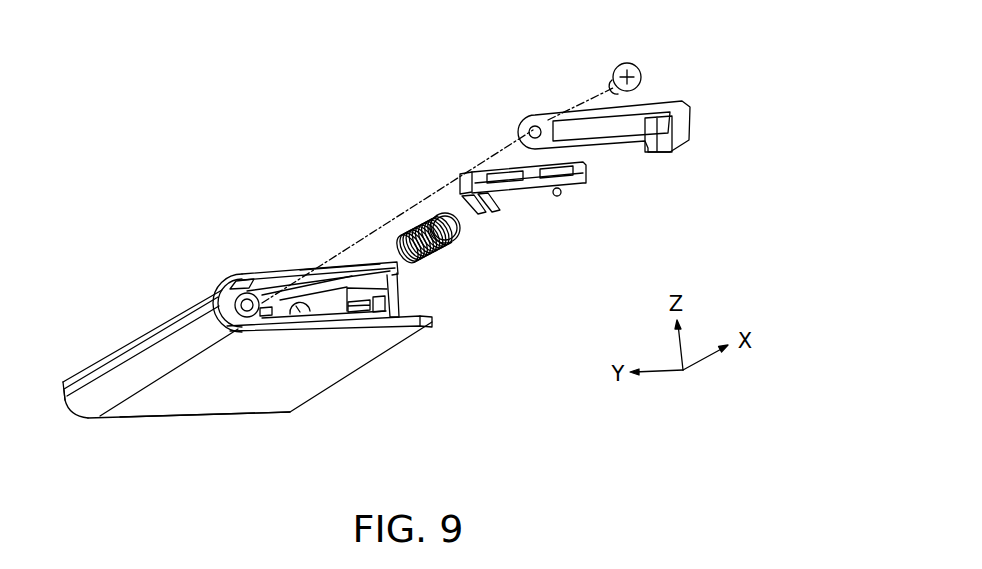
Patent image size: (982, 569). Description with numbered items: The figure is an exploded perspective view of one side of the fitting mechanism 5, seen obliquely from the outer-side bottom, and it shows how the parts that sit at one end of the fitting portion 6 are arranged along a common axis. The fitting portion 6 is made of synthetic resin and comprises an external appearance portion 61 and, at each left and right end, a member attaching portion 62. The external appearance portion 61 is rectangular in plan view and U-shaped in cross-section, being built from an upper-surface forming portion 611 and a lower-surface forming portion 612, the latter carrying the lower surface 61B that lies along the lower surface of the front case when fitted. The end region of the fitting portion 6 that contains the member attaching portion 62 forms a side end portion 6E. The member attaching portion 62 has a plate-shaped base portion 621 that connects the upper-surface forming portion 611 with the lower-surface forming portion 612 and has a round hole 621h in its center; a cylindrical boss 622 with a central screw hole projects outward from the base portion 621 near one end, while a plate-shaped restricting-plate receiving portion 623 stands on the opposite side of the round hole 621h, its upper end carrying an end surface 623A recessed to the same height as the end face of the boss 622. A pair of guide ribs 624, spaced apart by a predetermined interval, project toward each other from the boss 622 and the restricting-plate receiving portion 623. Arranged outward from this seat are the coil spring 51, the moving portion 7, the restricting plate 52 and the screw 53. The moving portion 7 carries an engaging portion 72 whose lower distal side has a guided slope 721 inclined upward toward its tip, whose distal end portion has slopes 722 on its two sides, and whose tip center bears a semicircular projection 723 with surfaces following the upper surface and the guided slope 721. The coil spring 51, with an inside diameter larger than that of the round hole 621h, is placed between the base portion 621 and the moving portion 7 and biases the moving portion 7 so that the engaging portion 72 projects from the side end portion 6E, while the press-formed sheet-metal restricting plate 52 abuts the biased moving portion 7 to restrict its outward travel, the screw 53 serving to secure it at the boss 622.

The fitting mechanism 5 is at (392, 260).
The fitting portion 6 is at (291, 328).
The external appearance portion 61 is at (247, 328).
The lower surface 61B is at (211, 403).
The side end portion 6E is at (126, 430).
The upper-surface forming portion 611 is at (332, 268).
The lower-surface forming portion 612 is at (424, 326).
The member attaching portion 62 is at (365, 304).
The base portion 621 is at (330, 314).
The round hole 621h is at (288, 290).
The boss 622 is at (227, 289).
The restricting-plate receiving portion 623 is at (396, 320).
The end surface 623A is at (420, 319).
The guide ribs 624 is at (268, 318).
The moving portion 7 is at (554, 175).
The engaging portion 72 is at (554, 175).
The guided slope 721 is at (532, 190).
The slopes 722 is at (475, 178).
The projection 723 is at (533, 170).
The coil spring 51 is at (470, 247).
The restricting plate 52 is at (684, 163).
The screw 53 is at (623, 63).